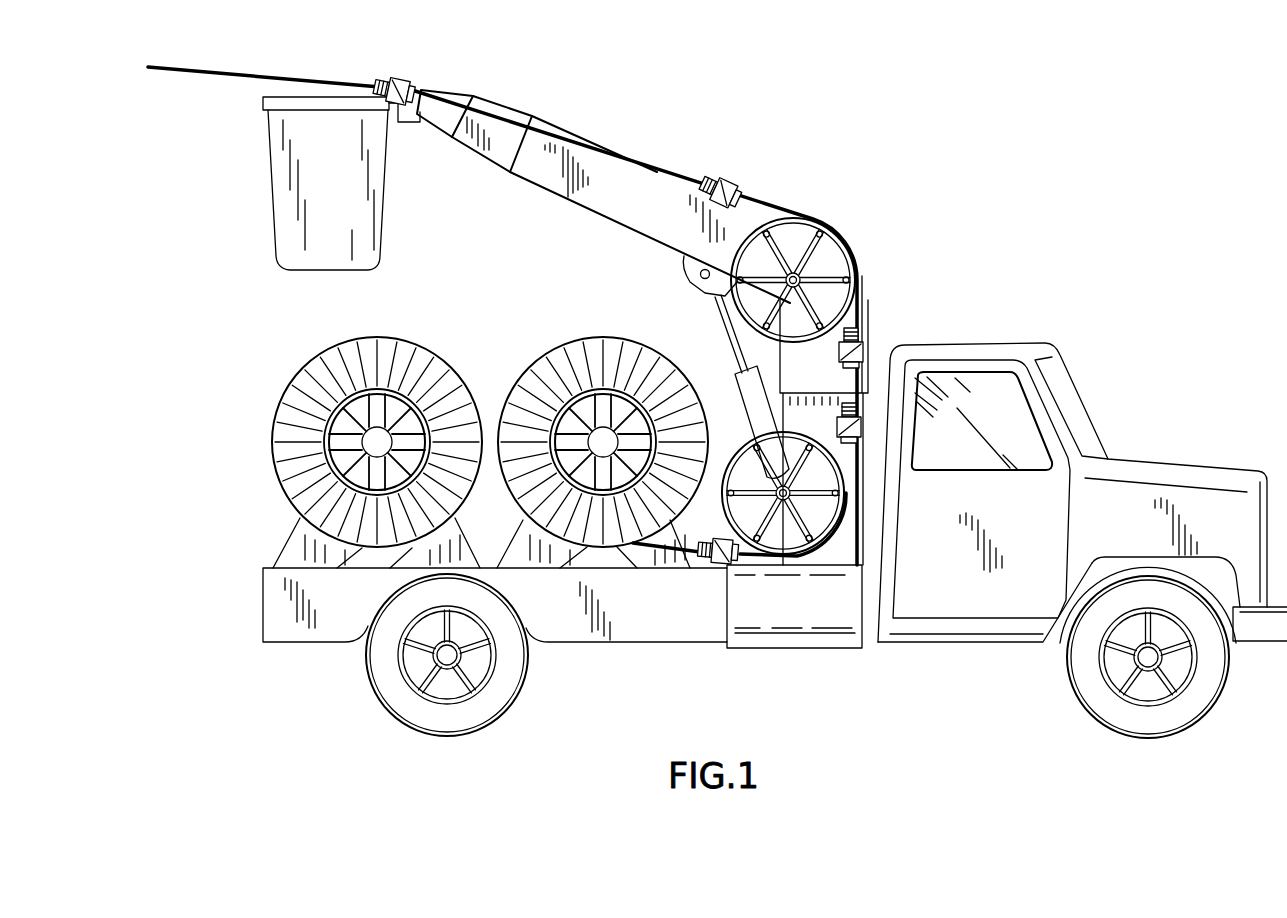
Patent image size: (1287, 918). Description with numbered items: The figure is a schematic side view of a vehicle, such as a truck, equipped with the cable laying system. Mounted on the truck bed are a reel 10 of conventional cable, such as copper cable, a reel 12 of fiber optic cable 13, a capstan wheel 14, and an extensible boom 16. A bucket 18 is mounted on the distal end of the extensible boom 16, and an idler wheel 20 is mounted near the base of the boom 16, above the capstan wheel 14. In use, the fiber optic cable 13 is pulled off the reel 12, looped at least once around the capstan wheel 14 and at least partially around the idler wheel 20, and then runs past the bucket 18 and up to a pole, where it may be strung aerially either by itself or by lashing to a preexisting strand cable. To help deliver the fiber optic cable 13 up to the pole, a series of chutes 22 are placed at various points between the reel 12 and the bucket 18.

The reel of conventional cable 10 is at (260, 386).
The reel of fiber optic cable 12 is at (558, 329).
The fiber optic cable 13 is at (235, 70).
The capstan wheel 14 is at (802, 565).
The extensible boom 16 is at (557, 123).
The bucket 18 is at (335, 179).
The idler wheel 20 is at (721, 294).
The chutes 22 is at (395, 78).